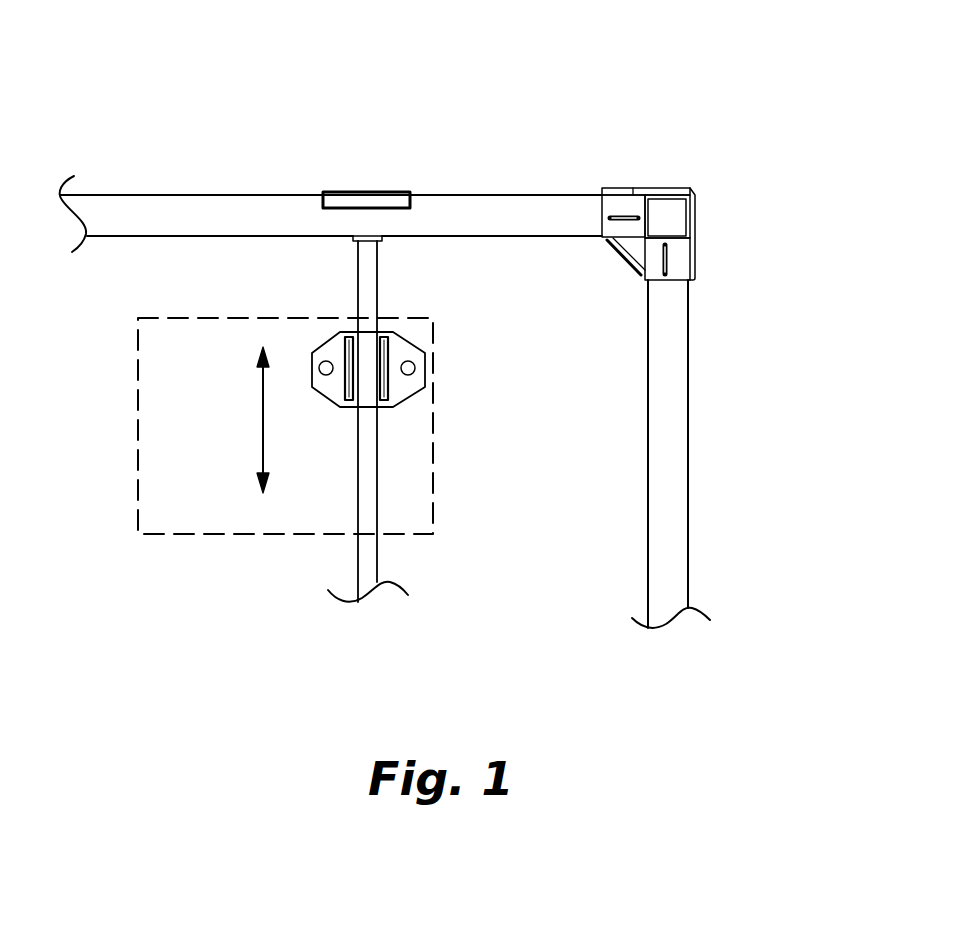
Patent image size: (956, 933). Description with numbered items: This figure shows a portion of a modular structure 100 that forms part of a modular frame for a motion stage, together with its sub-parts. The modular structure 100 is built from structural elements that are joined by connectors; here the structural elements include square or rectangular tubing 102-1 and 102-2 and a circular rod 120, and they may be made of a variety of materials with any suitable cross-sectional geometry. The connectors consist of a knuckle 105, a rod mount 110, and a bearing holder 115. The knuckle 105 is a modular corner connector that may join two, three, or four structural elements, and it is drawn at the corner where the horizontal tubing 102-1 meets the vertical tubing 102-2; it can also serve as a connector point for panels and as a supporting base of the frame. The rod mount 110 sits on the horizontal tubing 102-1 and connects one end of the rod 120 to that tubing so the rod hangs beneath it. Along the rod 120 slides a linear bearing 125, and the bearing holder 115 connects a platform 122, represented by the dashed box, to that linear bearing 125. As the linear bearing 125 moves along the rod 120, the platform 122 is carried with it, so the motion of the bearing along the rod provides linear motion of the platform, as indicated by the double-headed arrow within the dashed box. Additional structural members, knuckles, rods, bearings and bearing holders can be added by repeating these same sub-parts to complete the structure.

The modular structure 100 is at (592, 88).
The square tubing 102-1 is at (212, 208).
The square tubing 102-2 is at (672, 406).
The knuckle 105 is at (690, 192).
The rod mount 110 is at (384, 198).
The bearing holder 115 is at (405, 386).
The rod 120 is at (371, 292).
The platform 122 is at (434, 497).
The linear bearing 125 is at (366, 348).